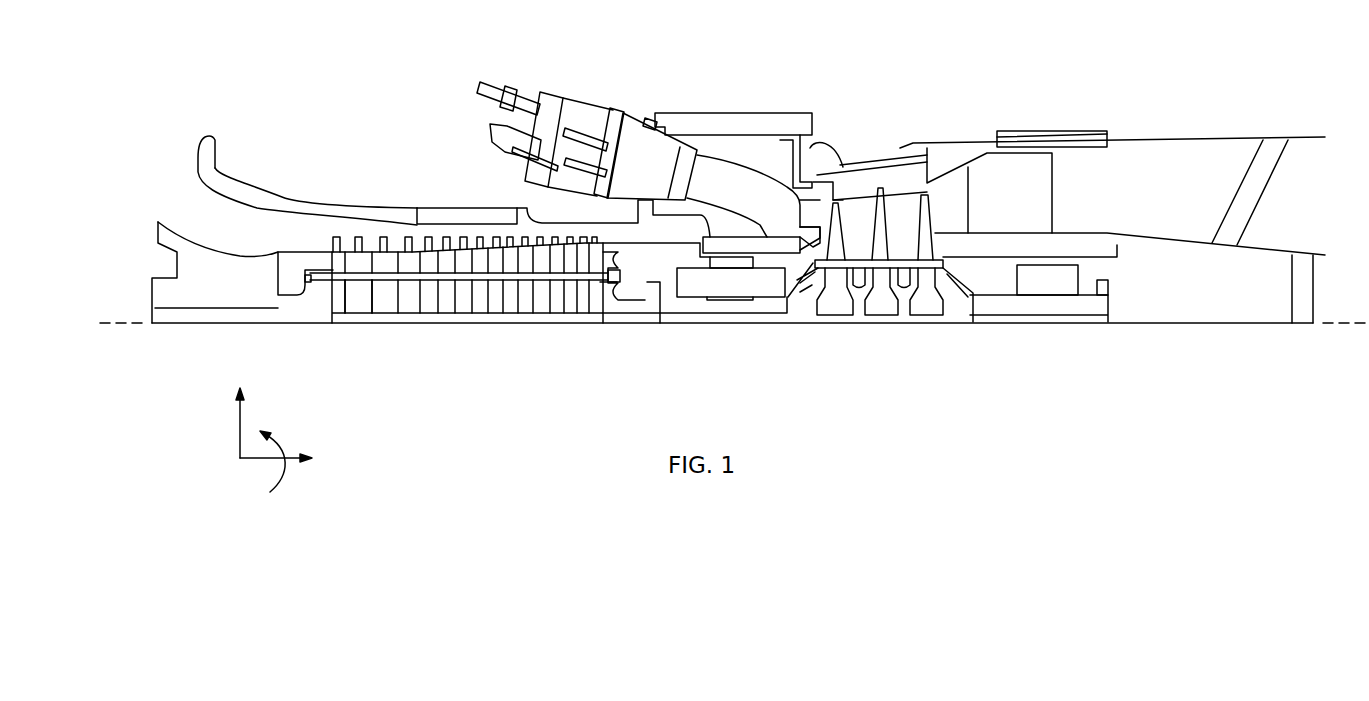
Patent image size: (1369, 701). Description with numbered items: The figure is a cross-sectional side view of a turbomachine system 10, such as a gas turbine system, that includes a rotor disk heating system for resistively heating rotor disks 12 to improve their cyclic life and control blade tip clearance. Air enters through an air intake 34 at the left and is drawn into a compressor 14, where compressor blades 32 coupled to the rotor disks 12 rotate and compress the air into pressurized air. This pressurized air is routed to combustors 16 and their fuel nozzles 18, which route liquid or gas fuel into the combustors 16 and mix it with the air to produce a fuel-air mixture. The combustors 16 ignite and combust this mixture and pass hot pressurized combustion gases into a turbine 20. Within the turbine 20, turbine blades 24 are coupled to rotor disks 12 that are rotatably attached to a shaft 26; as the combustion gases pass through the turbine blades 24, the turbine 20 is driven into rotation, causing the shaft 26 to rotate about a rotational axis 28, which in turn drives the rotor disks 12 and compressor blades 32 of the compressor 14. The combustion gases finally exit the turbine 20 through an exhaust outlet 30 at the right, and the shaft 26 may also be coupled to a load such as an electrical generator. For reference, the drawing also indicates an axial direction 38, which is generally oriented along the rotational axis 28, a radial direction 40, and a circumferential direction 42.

The turbomachine system 10 is at (652, 350).
The rotor disks 12 is at (357, 300).
The compressor 14 is at (558, 195).
The combustors 16 is at (460, 110).
The fuel nozzles 18 is at (580, 140).
The turbine 20 is at (910, 105).
The turbine blades 24 is at (880, 192).
The shaft 26 is at (757, 307).
The rotational axis 28 is at (122, 323).
The exhaust outlet 30 is at (1325, 102).
The compressor blades 32 is at (362, 243).
The air intake 34 is at (210, 228).
The axial direction 38 is at (270, 460).
The radial direction 40 is at (240, 428).
The circumferential direction 42 is at (287, 447).